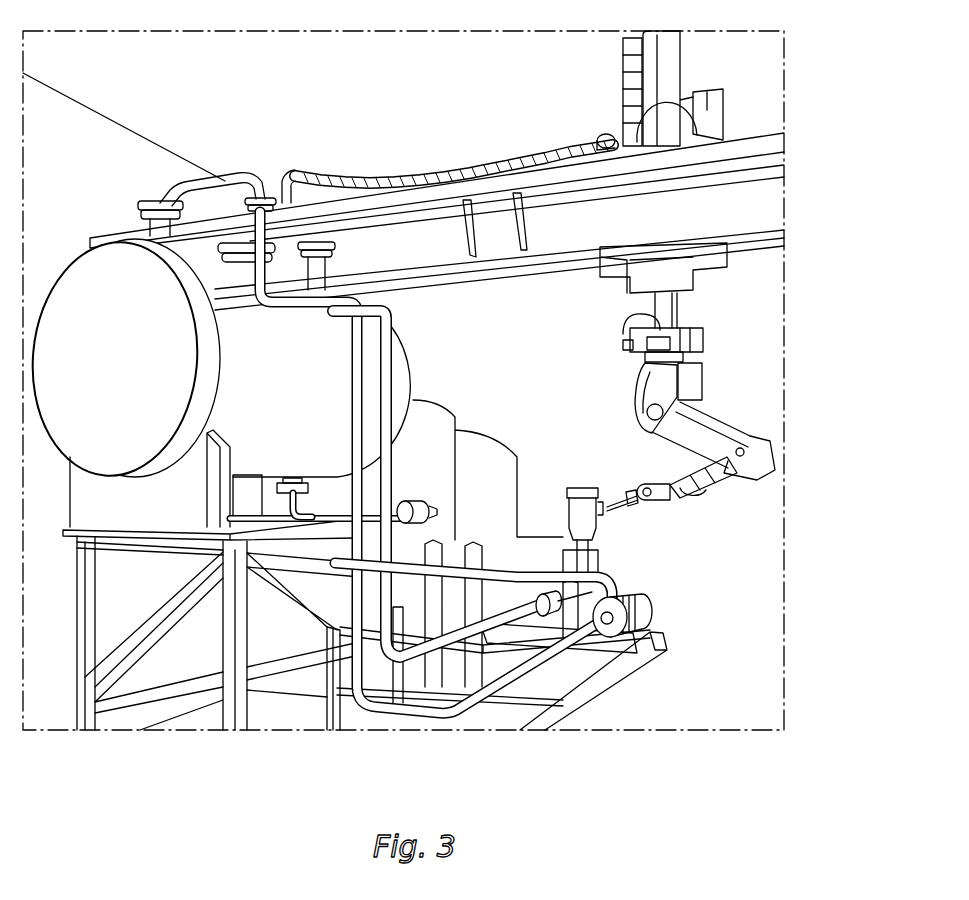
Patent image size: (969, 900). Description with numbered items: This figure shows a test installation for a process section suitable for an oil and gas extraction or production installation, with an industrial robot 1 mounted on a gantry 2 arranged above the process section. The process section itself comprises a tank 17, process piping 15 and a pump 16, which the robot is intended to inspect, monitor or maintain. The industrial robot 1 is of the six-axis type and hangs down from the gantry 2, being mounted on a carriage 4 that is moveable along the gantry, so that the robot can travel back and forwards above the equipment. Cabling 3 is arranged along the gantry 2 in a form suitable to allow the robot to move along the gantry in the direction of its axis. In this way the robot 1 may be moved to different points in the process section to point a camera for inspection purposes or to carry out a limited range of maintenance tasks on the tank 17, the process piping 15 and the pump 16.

The industrial robot 1 is at (727, 388).
The gantry 2 is at (762, 205).
The cabling 3 is at (695, 65).
The carriage 4 is at (712, 272).
The process piping 15 is at (603, 593).
The pump 16 is at (650, 608).
The tank 17 is at (122, 430).